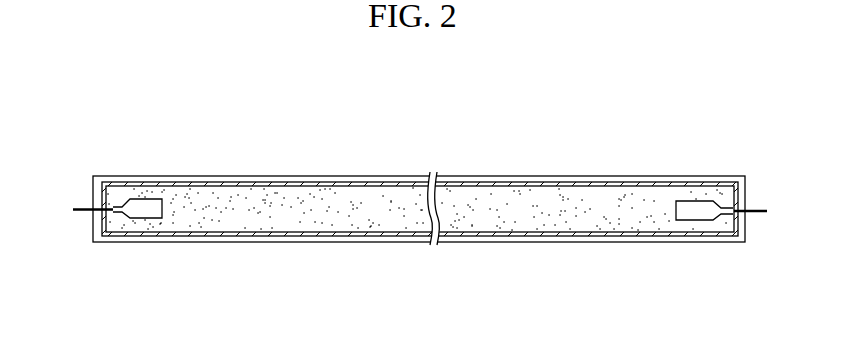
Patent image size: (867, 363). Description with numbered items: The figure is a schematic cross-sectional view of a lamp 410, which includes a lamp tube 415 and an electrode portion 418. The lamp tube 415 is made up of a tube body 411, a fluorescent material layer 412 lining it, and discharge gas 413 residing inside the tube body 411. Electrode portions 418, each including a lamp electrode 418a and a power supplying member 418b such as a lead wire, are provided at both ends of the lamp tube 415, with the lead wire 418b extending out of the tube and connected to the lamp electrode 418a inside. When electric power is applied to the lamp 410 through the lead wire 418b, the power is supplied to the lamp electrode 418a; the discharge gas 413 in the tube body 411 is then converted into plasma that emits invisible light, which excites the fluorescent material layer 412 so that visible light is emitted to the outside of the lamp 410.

The lamp 410 is at (410, 211).
The tube body 411 is at (273, 242).
The fluorescent material layer 412 is at (323, 236).
The discharge gas 413 is at (265, 302).
The lamp tube 415 is at (419, 259).
The electrode portion 418 is at (114, 269).
The lamp electrode 418a is at (143, 213).
The power supplying member 418b is at (83, 254).